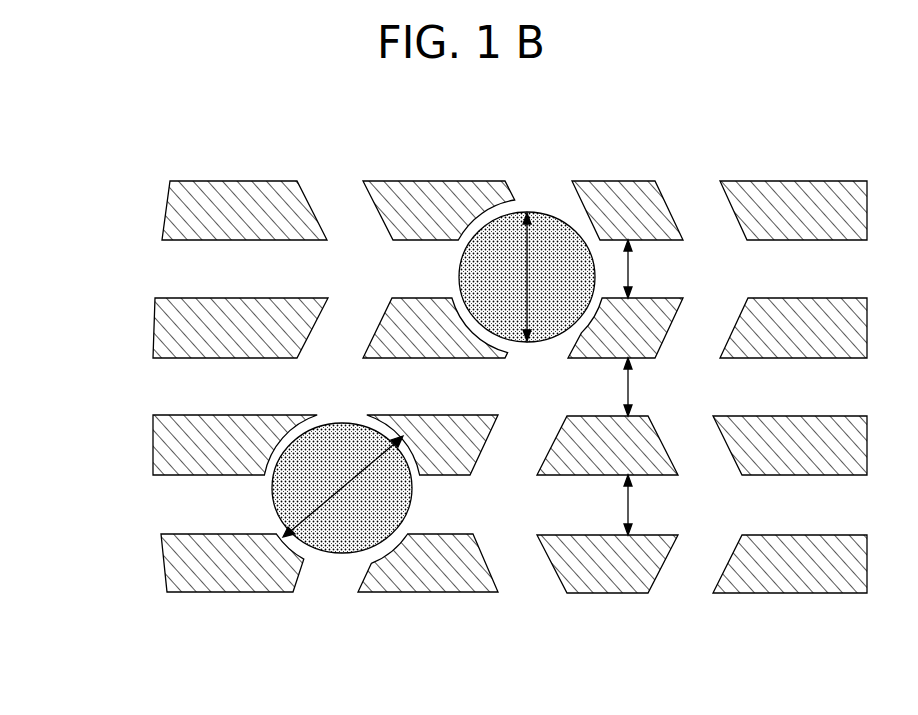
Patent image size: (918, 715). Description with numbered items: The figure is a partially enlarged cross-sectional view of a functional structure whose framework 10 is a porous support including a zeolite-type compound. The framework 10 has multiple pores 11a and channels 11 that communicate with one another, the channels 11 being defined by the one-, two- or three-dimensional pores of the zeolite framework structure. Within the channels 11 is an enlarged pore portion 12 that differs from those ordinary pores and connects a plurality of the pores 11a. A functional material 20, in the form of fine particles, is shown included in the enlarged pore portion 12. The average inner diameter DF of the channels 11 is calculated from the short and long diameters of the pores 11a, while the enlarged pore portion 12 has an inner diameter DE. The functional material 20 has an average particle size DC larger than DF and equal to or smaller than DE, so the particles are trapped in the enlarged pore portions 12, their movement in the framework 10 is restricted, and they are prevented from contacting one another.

The framework 10 is at (143, 188).
The channel 11 is at (60, 252).
The pore 11a is at (333, 190).
The enlarged pore portion 12 is at (551, 197).
The functional material 20 is at (483, 246).
The average particle size of the functional material DC is at (545, 212).
The inner diameter of the enlarged pore portion DE is at (345, 490).
The average inner diameter of the channels DF is at (633, 267).